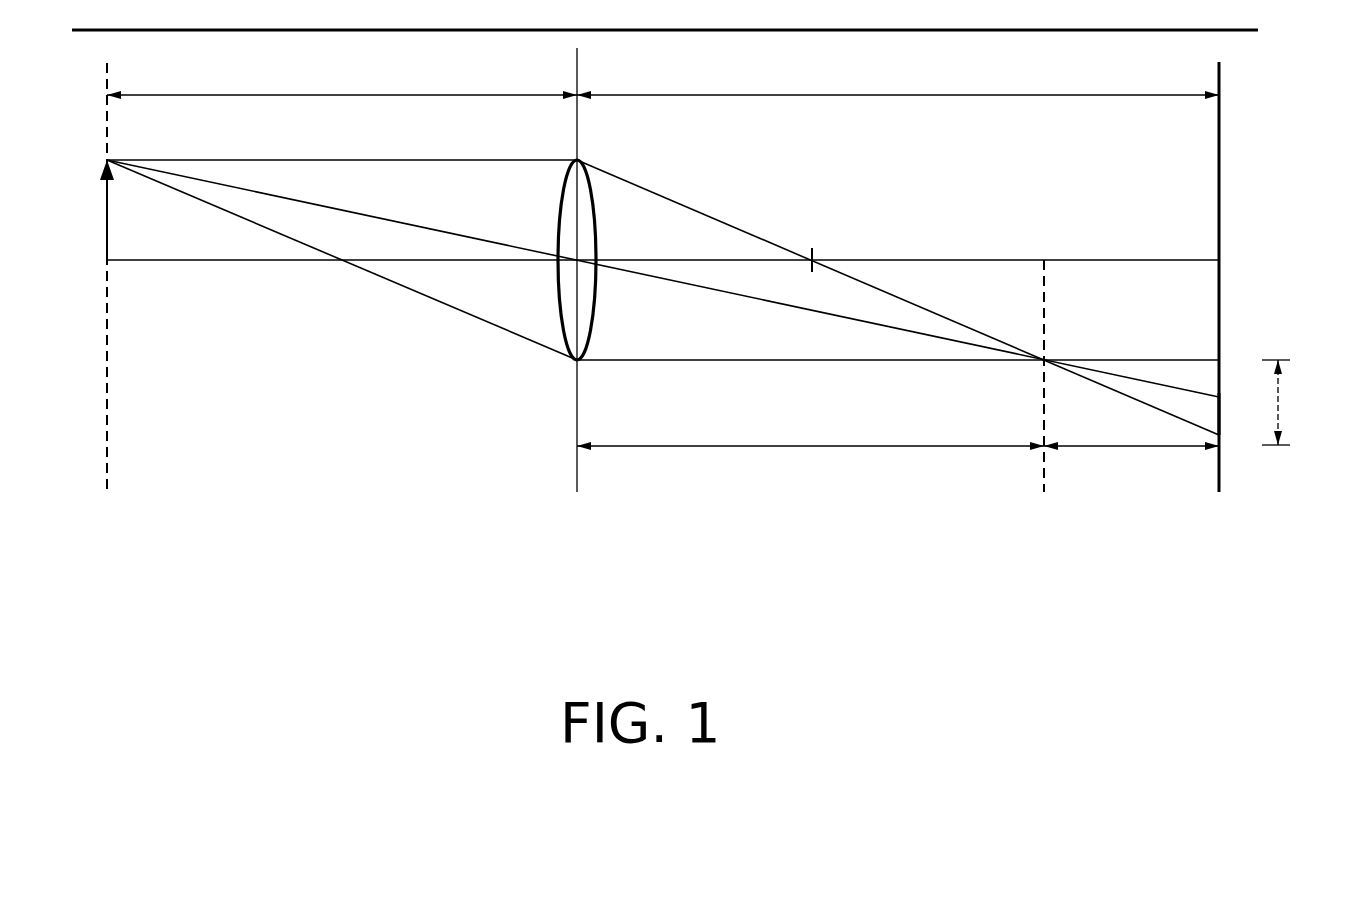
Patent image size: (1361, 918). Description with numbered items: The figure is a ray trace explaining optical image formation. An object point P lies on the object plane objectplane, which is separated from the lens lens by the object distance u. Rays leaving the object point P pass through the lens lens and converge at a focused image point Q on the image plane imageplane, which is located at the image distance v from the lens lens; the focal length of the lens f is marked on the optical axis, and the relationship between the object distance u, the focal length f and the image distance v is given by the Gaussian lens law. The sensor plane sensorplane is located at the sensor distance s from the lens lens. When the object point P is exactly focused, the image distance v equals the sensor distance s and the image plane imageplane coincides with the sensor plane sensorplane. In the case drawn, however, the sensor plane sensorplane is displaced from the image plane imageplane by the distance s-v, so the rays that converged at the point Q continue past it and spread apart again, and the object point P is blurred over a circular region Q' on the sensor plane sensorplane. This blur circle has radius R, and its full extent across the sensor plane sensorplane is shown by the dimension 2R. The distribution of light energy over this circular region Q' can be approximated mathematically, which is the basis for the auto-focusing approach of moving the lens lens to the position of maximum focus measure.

The object point P is at (98, 209).
The focused image point Q is at (1033, 373).
The blurred circular region Q' is at (1238, 406).
The focal length of the lens f is at (812, 241).
The object distance u is at (342, 82).
The sensor distance s is at (898, 82).
The image distance v is at (810, 433).
The displacement distance between sensor plane and image plane s-v is at (1131, 434).
The diameter of the blur circle 2R is at (1282, 402).
The object plane objectplane is at (123, 294).
The image plane imageplane is at (1050, 392).
The sensor plane sensorplane is at (1264, 294).
The element lens is at (577, 270).